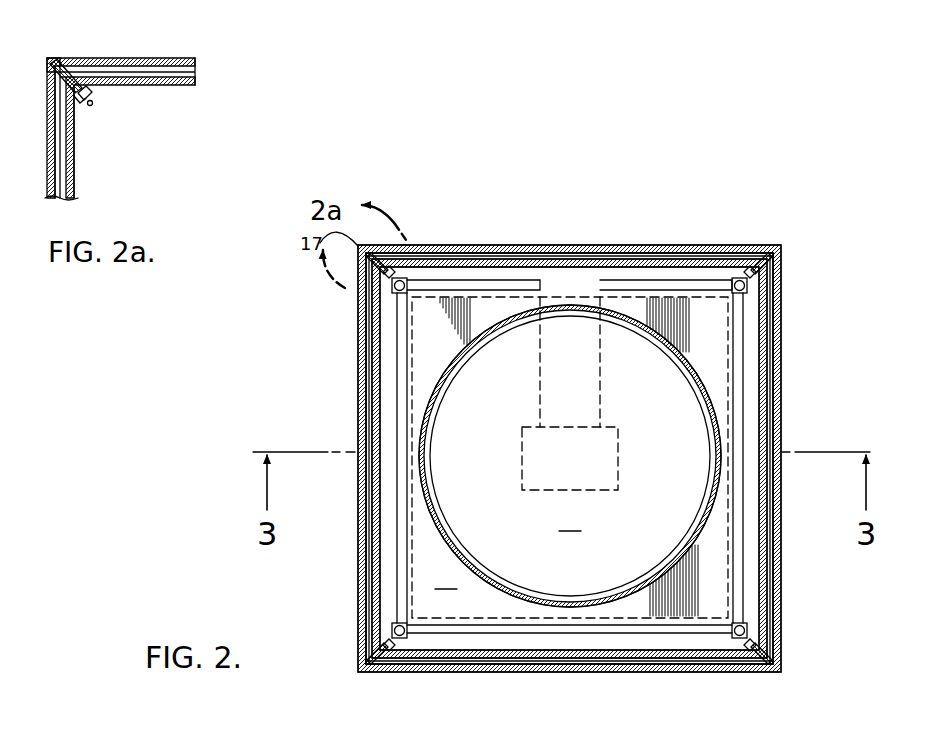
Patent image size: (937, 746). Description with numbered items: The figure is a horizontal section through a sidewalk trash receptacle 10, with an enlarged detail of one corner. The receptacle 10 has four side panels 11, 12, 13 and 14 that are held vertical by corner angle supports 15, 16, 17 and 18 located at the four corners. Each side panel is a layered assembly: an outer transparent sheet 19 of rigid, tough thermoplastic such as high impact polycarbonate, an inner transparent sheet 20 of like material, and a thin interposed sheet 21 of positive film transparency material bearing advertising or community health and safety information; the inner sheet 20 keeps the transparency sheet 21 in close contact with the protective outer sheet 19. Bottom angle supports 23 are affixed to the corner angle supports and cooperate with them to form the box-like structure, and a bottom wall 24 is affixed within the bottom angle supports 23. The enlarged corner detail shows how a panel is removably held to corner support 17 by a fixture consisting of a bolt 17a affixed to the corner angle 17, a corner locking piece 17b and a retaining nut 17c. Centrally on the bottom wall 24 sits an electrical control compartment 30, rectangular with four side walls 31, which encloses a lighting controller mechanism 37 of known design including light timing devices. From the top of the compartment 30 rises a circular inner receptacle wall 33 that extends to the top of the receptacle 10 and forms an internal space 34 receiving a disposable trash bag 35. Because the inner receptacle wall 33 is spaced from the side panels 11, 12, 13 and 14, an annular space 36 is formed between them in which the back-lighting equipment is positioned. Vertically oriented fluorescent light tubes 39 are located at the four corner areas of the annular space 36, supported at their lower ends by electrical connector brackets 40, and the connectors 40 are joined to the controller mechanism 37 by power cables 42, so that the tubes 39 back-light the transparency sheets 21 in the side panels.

In FIG. 2, the trash receptacle 10 is at (775, 244).
In FIG. 2, the side panel 11 is at (556, 674).
In FIG. 2, the side panel 12 is at (784, 487).
In FIG. 2, the side panel 13 is at (524, 243).
In FIG. 2, the side panel 14 is at (356, 474).
In FIG. 2, the corner angle support 15 is at (783, 668).
In FIG. 2, the corner angle support 16 is at (783, 258).
In FIG. 2a, the corner angle support 17 is at (51, 59).
In FIG. 2, the corner angle support 17 is at (381, 265).
In FIG. 2a, the bolt 17a is at (61, 62).
In FIG. 2a, the corner locking piece 17b is at (77, 106).
In FIG. 2a, the retaining nut 17c is at (83, 100).
In FIG. 2, the corner angle support 18 is at (366, 666).
In FIG. 2a, the outer transparent sheet 19 is at (170, 60).
In FIG. 2, the outer transparent sheet 19 is at (578, 250).
In FIG. 2a, the inner transparent sheet 20 is at (130, 86).
In FIG. 2, the inner transparent sheet 20 is at (612, 257).
In FIG. 2a, the sheet of positive film transparency material 21 is at (129, 70).
In FIG. 2, the sheet of positive film transparency material 21 is at (646, 262).
In FIG. 2, the bottom angle support 23 is at (684, 267).
In FIG. 2, the bottom wall 24 is at (590, 651).
In FIG. 2, the electrical control compartment 30 is at (570, 457).
In FIG. 2, the side wall 31 is at (470, 282).
In FIG. 2, the inner receptacle wall 33 is at (438, 390).
In FIG. 2, the internal space 34 is at (570, 456).
In FIG. 2, the disposable trash bag 35 is at (706, 394).
In FIG. 2, the annular space 36 is at (717, 292).
In FIG. 2, the lighting controller mechanism 37 is at (611, 491).
In FIG. 2, the fluorescent light tube 39 is at (750, 287).
In FIG. 2, the electrical connector bracket 40 is at (402, 278).
In FIG. 2, the power cable 42 is at (481, 297).